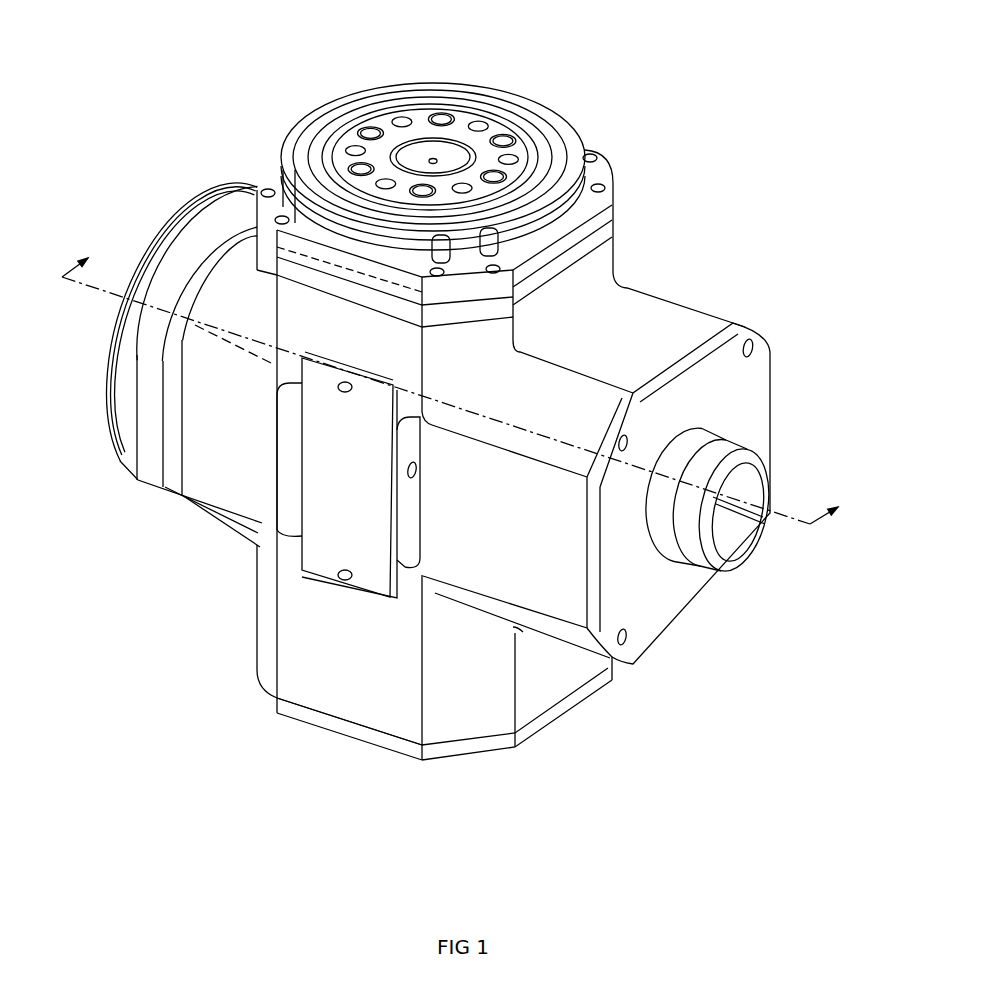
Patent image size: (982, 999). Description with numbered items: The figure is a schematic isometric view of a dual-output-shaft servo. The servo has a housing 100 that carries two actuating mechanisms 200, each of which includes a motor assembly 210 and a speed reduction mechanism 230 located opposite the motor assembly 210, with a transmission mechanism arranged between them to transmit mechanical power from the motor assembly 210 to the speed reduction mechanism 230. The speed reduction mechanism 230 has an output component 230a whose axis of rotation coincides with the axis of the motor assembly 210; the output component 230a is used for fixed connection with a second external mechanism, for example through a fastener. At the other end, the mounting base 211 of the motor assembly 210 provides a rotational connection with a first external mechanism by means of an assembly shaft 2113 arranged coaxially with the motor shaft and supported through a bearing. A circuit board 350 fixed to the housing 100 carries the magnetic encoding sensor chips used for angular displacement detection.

The housing 100 is at (645, 290).
The actuating mechanism 200 is at (572, 140).
The motor assembly 210 is at (743, 413).
The mounting base 211 is at (727, 383).
The assembly shaft 2113 is at (690, 533).
The speed reduction mechanism 230 is at (353, 137).
The output component 230a is at (473, 128).
The circuit board 350 is at (360, 462).